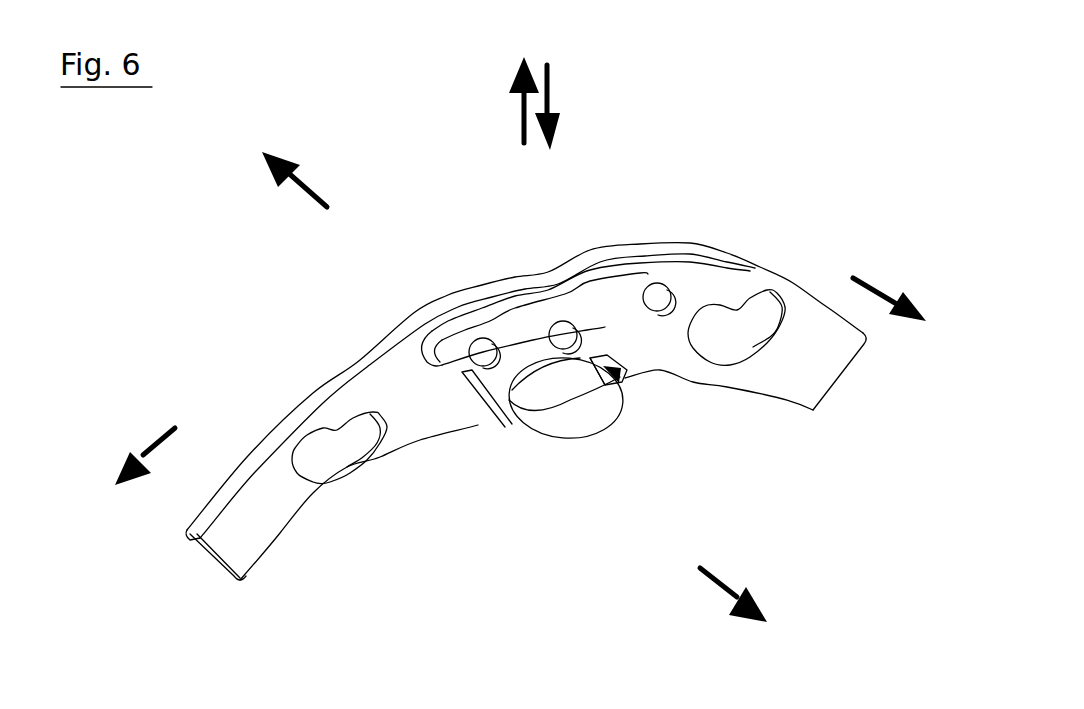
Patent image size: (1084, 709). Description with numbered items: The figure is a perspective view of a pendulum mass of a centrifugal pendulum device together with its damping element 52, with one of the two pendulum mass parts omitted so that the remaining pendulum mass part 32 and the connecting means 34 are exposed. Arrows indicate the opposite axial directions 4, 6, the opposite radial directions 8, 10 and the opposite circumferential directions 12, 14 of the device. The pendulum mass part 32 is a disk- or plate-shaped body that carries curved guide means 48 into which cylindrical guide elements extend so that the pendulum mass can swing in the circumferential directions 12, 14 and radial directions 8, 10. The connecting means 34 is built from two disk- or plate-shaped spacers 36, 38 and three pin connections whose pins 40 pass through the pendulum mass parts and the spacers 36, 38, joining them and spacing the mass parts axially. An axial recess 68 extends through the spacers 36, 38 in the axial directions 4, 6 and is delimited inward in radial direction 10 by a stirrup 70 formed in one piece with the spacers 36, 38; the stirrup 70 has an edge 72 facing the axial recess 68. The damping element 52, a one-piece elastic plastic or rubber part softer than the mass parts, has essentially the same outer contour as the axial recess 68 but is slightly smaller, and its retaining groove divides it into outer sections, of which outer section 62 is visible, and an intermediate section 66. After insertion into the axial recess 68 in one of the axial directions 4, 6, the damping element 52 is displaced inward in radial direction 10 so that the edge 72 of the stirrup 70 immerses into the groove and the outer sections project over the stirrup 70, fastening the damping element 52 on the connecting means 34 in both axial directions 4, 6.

The axial direction 4 is at (710, 577).
The axial direction 6 is at (307, 200).
The radial direction 8 is at (518, 112).
The radial direction 10 is at (550, 94).
The circumferential direction 12 is at (152, 442).
The circumferential direction 14 is at (884, 277).
The pendulum mass part 32 is at (400, 370).
The connecting means 34 is at (490, 285).
The spacer 36 is at (565, 296).
The spacer 38 is at (519, 294).
The pin 40 is at (484, 343).
The guide means 48 is at (330, 430).
The damping element 52 is at (580, 452).
The outer section 62 is at (545, 440).
The intermediate section 66 is at (533, 392).
The axial recess 68 is at (607, 377).
The stirrup 70 is at (618, 378).
The edge 72 is at (596, 362).